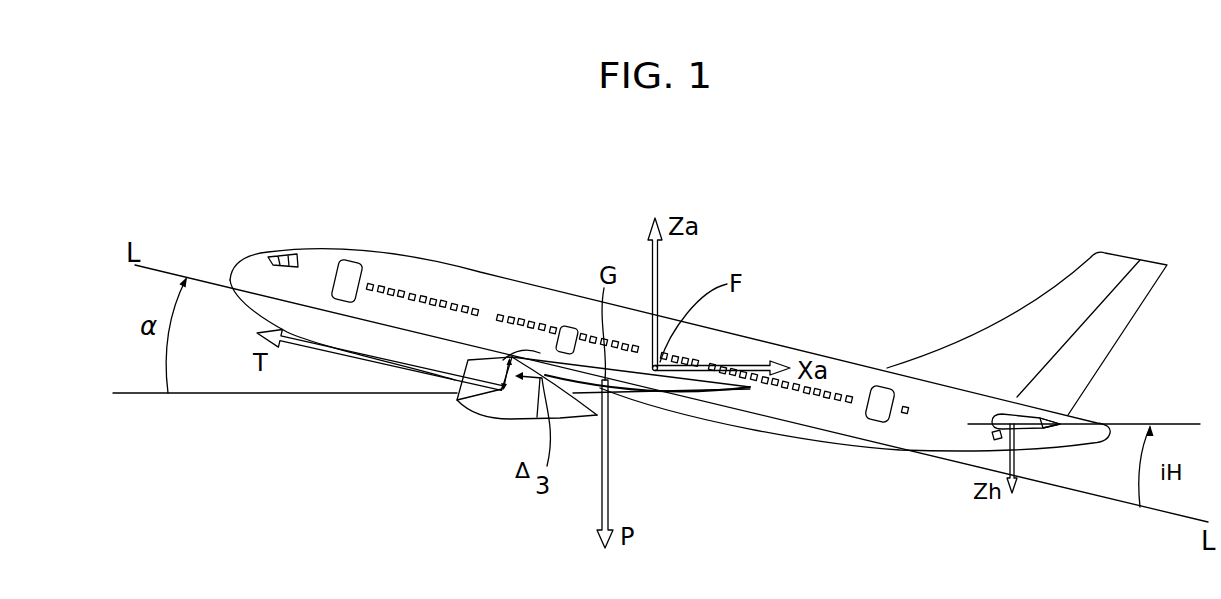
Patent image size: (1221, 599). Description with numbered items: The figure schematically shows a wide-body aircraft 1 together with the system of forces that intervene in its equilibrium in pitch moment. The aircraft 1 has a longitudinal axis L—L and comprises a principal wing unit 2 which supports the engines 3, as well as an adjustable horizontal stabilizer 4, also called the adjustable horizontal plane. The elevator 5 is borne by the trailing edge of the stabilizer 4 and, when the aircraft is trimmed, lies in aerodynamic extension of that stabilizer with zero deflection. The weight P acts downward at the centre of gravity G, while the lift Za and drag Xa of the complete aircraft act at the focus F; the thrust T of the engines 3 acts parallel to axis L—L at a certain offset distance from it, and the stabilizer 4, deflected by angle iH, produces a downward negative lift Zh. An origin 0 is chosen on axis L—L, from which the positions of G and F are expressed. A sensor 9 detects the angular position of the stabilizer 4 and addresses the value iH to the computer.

The wide-body aircraft 1 is at (449, 268).
The principal wing unit 2 is at (640, 378).
The engines 3 is at (490, 404).
The adjustable horizontal stabilizer 4 is at (1028, 430).
The elevator 5 is at (1032, 428).
The sensor 9 is at (992, 437).
The origin 0 is at (540, 352).